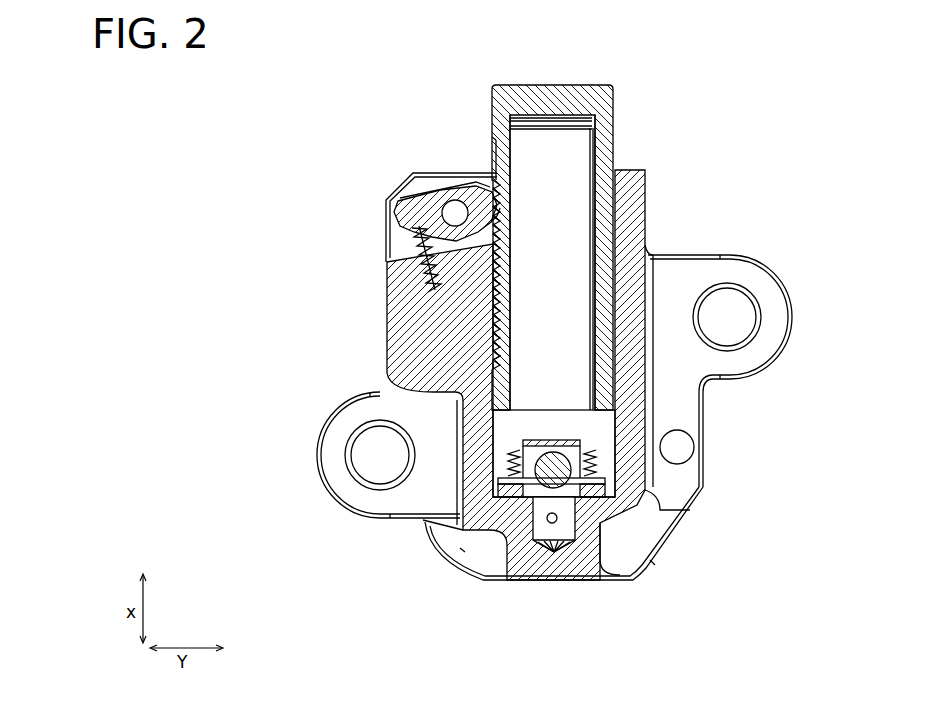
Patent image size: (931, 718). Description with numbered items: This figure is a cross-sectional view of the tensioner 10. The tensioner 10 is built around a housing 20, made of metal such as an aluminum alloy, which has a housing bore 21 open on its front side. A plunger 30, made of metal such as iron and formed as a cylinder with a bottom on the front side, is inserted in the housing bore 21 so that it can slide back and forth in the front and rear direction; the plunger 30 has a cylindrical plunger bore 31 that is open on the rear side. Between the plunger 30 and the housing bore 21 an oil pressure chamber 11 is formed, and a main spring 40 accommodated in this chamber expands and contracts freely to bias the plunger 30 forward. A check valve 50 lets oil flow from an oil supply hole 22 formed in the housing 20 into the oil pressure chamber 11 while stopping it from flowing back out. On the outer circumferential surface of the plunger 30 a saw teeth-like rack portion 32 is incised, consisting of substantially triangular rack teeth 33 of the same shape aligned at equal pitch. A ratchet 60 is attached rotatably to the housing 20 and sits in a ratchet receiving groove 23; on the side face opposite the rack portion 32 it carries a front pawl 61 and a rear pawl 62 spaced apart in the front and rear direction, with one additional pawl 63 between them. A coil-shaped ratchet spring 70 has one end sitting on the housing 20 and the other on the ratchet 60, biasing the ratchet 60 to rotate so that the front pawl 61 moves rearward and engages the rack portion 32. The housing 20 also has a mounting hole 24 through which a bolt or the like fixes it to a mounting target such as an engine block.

The tensioner 10 is at (322, 108).
The oil pressure chamber 11 is at (539, 312).
The housing 20 is at (646, 205).
The housing bore 21 is at (610, 428).
The oil supply hole 22 is at (556, 524).
The ratchet receiving groove 23 is at (392, 252).
The mounting hole 24 is at (375, 462).
The plunger 30 is at (615, 115).
The plunger bore 31 is at (590, 152).
The rack portion 32 is at (494, 297).
The rack teeth 33 is at (498, 172).
The main spring 40 is at (513, 465).
The check valve 50 is at (597, 463).
The ratchet 60 is at (405, 221).
The front pawl 61 is at (477, 173).
The rear pawl 62 is at (500, 216).
The additional pawl 63 is at (470, 193).
The ratchet spring 70 is at (395, 272).